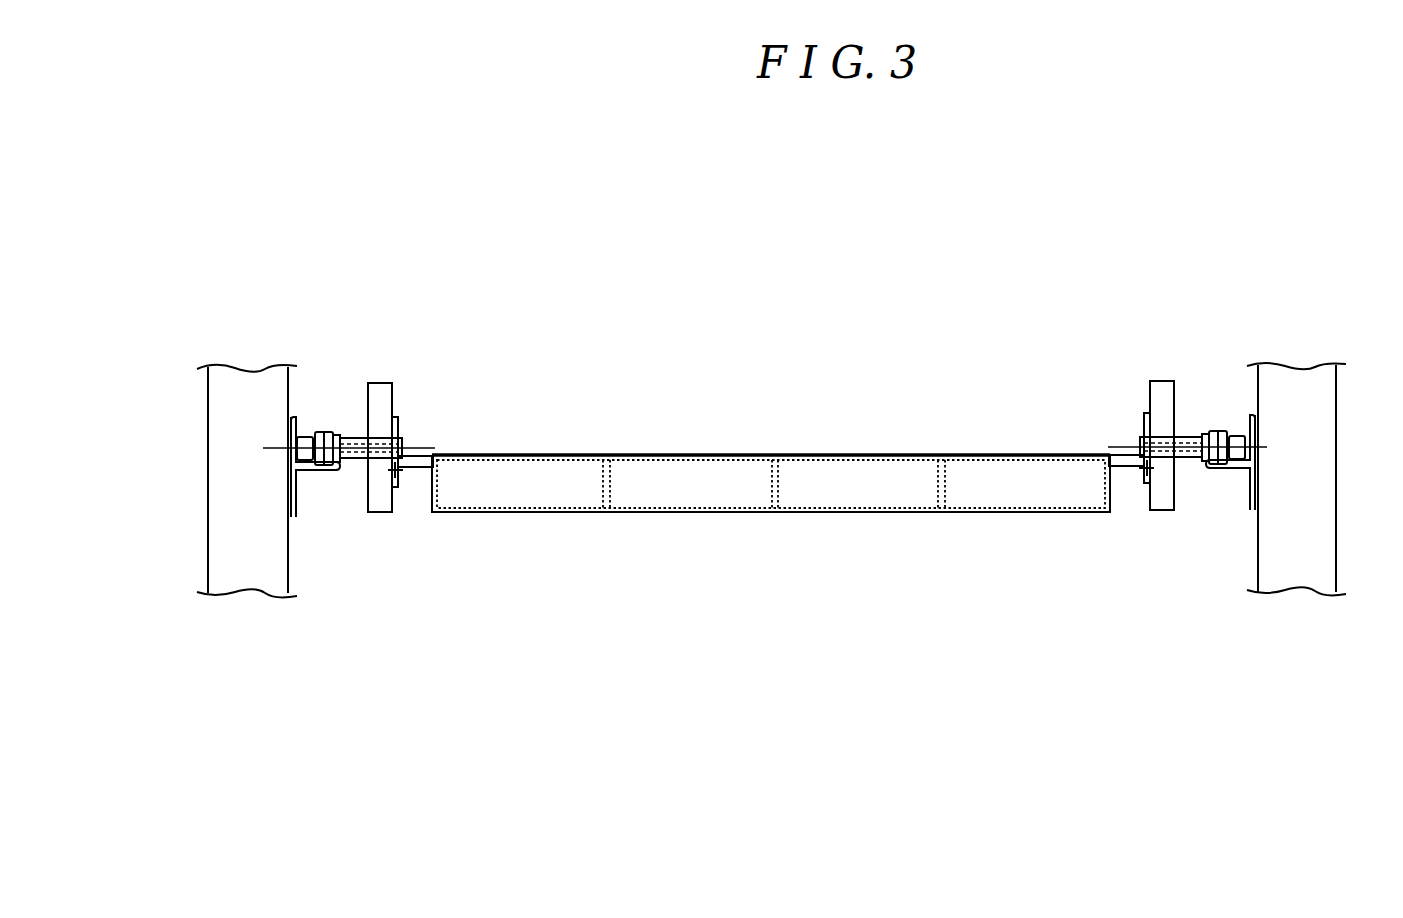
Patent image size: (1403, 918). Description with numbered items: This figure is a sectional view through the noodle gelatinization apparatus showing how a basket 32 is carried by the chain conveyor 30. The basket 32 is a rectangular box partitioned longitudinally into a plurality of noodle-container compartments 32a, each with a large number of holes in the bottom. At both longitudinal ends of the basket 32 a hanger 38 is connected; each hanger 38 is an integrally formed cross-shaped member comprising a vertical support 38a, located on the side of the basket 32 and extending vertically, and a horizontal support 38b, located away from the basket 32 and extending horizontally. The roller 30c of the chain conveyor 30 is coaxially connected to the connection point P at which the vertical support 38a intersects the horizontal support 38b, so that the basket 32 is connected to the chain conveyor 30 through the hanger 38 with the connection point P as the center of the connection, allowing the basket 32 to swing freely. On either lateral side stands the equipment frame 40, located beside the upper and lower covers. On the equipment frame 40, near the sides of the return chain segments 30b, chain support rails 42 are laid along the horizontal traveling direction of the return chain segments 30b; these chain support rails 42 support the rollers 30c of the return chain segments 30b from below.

The chain conveyor 30 is at (722, 402).
The return chain segment 30b is at (312, 427).
The roller 30c is at (325, 432).
The basket 32 is at (771, 443).
The noodle-container compartment 32a is at (527, 475).
The hanger 38 is at (779, 388).
The vertical support 38a is at (385, 398).
The horizontal support 38b is at (443, 300).
The equipment frame 40 is at (232, 506).
The chain support rail 42 is at (318, 470).
The connection point P is at (421, 447).